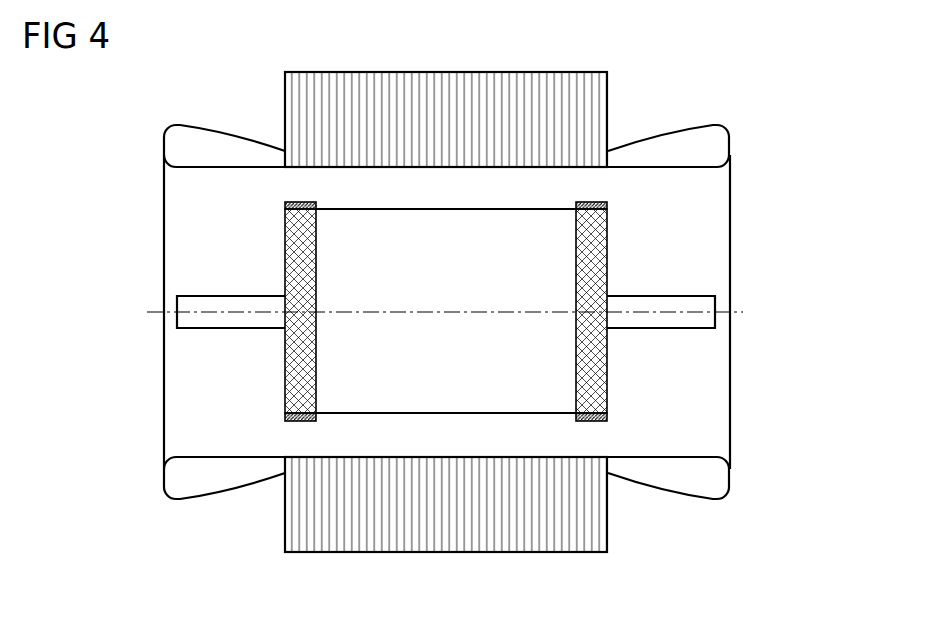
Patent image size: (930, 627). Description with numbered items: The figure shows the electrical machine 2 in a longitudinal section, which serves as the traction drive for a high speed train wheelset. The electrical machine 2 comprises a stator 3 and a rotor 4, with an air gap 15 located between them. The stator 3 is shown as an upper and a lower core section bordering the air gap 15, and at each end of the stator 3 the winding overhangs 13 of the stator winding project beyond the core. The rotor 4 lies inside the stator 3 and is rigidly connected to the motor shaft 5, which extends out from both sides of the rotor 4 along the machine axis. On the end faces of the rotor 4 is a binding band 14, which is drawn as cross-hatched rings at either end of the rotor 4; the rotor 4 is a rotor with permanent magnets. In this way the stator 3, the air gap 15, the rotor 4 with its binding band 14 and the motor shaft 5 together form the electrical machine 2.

The electrical machine 2 is at (229, 104).
The stator 3 is at (593, 101).
The rotor 4 is at (556, 368).
The motor shaft 5 is at (707, 305).
The winding overhangs 13 is at (165, 145).
The binding band 14 is at (597, 250).
The air gap 15 is at (593, 186).